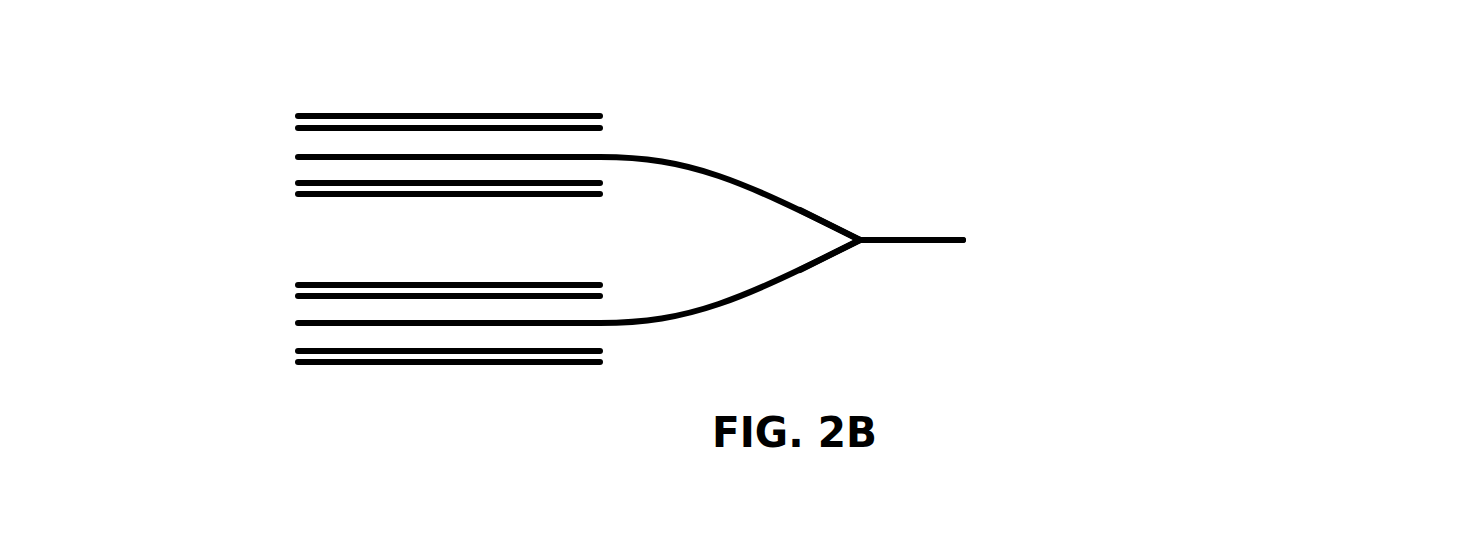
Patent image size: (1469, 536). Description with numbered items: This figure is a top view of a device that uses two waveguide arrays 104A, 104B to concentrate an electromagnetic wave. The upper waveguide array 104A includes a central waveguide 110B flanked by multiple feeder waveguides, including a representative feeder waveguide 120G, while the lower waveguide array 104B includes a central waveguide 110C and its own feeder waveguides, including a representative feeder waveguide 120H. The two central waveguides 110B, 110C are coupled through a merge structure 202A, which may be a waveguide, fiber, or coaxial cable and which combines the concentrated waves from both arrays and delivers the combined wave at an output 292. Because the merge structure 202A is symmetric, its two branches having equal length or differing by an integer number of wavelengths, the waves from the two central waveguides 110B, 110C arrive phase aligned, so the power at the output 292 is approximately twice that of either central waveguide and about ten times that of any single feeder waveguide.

The feeder waveguide group 104A is at (278, 92).
The waveguide array 104B is at (278, 377).
The feeder waveguide 120G is at (307, 114).
The feeder waveguide 120H is at (333, 365).
The central waveguide 110B is at (595, 155).
The central waveguide 110C is at (600, 327).
The merge structure 202A is at (735, 187).
The output 292 is at (963, 238).